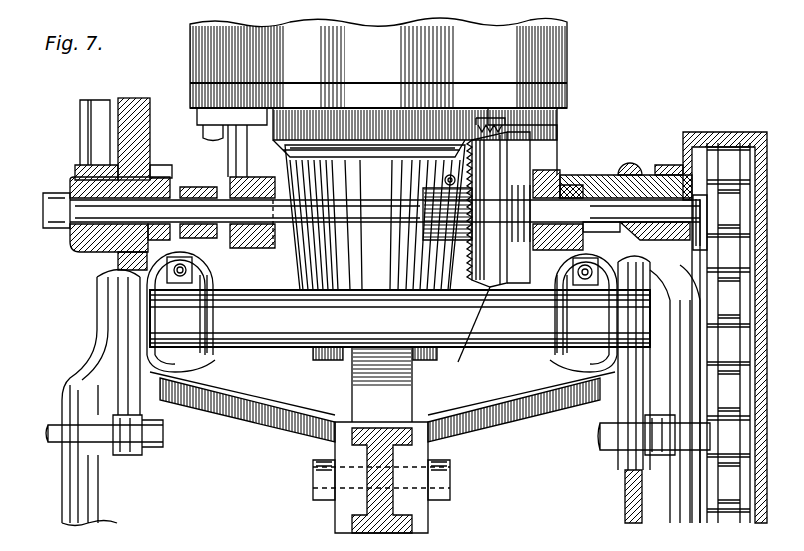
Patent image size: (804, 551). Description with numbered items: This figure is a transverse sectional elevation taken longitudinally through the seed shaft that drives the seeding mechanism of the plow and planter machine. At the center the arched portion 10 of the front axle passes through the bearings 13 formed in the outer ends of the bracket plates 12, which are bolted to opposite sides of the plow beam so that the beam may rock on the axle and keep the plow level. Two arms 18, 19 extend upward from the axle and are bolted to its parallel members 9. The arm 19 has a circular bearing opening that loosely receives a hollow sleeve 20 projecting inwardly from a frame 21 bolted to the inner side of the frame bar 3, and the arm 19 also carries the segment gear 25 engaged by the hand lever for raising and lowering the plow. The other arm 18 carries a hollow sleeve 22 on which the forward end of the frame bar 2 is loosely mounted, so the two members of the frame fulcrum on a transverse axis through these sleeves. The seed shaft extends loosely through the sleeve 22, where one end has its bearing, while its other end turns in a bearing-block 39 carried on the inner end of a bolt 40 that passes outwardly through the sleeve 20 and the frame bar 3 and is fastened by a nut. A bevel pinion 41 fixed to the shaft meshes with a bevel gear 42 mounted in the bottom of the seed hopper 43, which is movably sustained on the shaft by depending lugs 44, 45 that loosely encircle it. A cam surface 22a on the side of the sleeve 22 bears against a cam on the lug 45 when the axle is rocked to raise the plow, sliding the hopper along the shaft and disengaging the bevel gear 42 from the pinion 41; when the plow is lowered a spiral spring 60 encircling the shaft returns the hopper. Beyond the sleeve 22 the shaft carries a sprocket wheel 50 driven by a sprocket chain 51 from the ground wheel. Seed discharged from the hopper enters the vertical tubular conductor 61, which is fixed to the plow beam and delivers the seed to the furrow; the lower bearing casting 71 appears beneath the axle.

The seed hopper 43 is at (568, 36).
The bevel gear 42 is at (505, 125).
The frame 21 is at (80, 142).
The segment gear 25 is at (150, 112).
The hollow sleeve 20 is at (150, 162).
The frame bar 3 is at (70, 249).
The bolt 40 is at (43, 212).
The bearing-block 39 is at (195, 182).
The depending lug 44 is at (232, 246).
The tubular conductor 61 is at (375, 217).
The spiral spring 60 is at (515, 185).
The depending lug 45 is at (540, 250).
The hollow sleeve 22 is at (647, 175).
The cam surface 22a is at (603, 175).
The frame bar 2 is at (663, 175).
The sprocket wheel 50 is at (700, 157).
The sprocket chain 51 is at (712, 308).
The bearing 13 is at (165, 360).
The arched portion 10 is at (305, 322).
The bevel pinion 41 is at (468, 335).
The bracket plate 12 is at (263, 418).
The center bearing 71 is at (367, 533).
The arm 19 is at (97, 318).
The parallel member 9 is at (67, 393).
The arm 18 is at (620, 397).